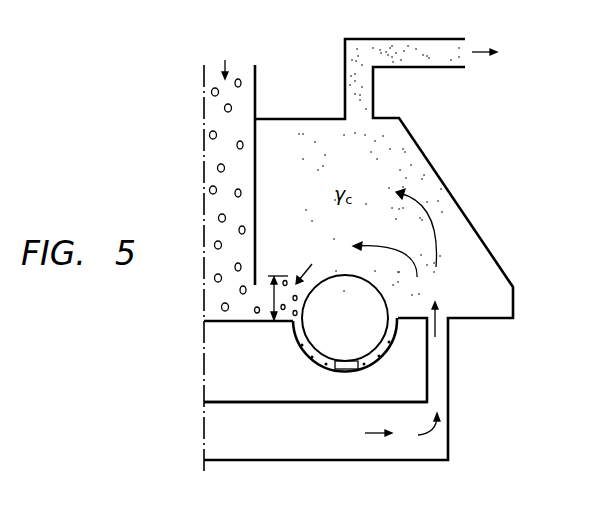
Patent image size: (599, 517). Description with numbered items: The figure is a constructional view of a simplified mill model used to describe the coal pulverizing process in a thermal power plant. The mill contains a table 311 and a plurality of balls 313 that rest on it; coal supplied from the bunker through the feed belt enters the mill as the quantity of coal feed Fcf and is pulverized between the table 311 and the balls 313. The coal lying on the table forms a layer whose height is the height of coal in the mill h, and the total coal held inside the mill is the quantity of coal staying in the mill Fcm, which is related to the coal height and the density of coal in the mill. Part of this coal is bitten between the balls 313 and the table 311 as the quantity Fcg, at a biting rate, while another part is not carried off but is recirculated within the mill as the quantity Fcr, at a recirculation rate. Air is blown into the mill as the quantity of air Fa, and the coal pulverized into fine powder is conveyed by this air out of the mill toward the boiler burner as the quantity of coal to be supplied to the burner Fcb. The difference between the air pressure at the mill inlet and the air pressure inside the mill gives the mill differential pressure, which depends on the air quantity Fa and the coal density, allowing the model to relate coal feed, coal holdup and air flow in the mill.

The table 311 is at (258, 392).
The balls 313 is at (363, 337).
The quantity of coal feed to the mill Fcf is at (231, 57).
The quantity of coal to be supplied to the burner Fcb is at (500, 54).
The quantity of coal staying in the mill Fcm is at (416, 218).
The quantity of coal to be recirculated Fcr is at (385, 247).
The quantity of coal to be bitten between the balls and the table Fcg is at (318, 263).
The quantity of air to be supplied to the mill Fa is at (386, 371).
The height of coal in the mill h is at (277, 298).